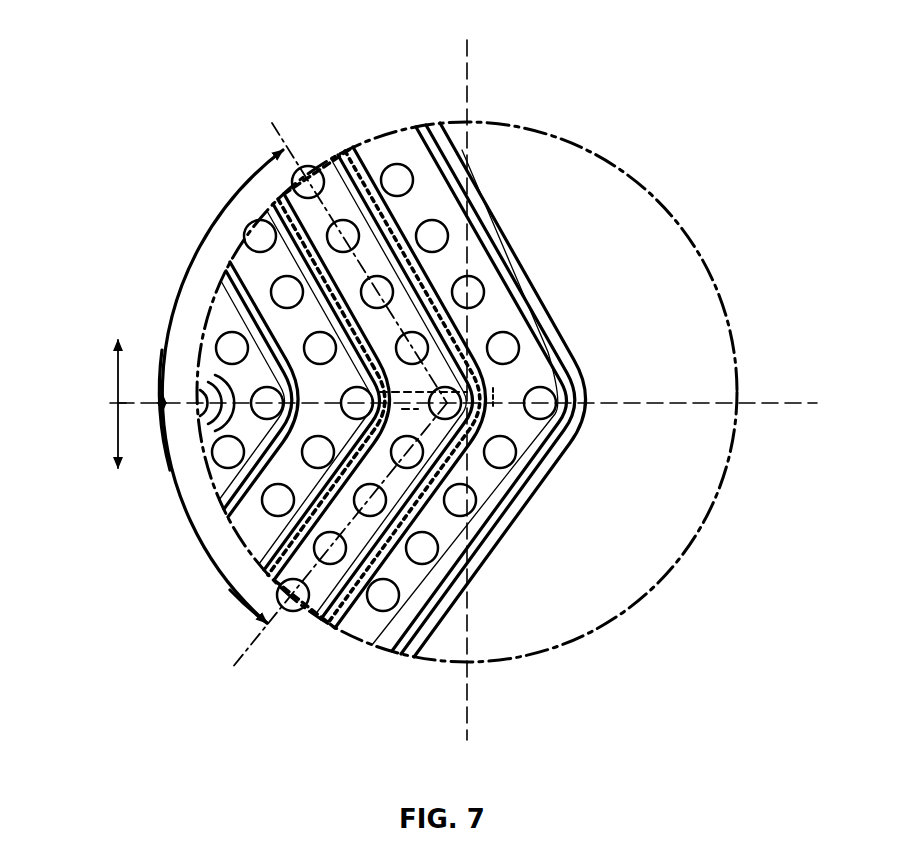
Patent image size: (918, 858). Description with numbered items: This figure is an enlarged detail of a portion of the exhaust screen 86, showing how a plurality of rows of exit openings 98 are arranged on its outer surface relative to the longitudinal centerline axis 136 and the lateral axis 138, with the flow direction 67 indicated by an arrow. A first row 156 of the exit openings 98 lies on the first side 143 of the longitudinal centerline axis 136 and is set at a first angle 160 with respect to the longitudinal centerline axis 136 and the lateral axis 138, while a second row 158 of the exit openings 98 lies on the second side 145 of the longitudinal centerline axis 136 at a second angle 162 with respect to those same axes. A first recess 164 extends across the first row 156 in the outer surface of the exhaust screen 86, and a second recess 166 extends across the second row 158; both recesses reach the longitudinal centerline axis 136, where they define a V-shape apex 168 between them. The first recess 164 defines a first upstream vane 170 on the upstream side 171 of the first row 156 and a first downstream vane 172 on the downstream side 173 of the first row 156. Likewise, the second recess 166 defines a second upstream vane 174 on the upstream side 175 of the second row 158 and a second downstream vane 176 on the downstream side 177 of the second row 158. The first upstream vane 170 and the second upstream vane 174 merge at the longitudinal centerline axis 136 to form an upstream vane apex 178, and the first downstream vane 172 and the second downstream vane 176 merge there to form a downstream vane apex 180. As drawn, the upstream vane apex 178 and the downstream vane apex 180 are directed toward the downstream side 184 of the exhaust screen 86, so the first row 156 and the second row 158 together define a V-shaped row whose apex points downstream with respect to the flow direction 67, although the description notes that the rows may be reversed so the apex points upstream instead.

The flow direction 67 is at (424, 40).
The exhaust screen 86 is at (205, 450).
The exit openings 98 is at (305, 183).
The longitudinal centerline axis 136 is at (161, 390).
The lateral axis 138 is at (470, 80).
The first side 143 is at (115, 430).
The second side 145 is at (115, 350).
The first row 156 is at (297, 612).
The second row 158 is at (333, 167).
The first angle 160 is at (183, 504).
The second angle 162 is at (182, 300).
The first recess 164 is at (263, 622).
The second recess 166 is at (341, 198).
The V-shape apex 168 is at (478, 392).
The first upstream vane 170 is at (306, 573).
The upstream side 171 is at (289, 524).
The first downstream vane 172 is at (382, 566).
The downstream side 173 is at (424, 516).
The second upstream vane 174 is at (296, 265).
The upstream side 175 is at (292, 272).
The second downstream vane 176 is at (386, 226).
The downstream side 177 is at (426, 272).
The upstream vane apex 178 is at (404, 413).
The downstream vane apex 180 is at (498, 396).
The downstream side 184 is at (767, 386).